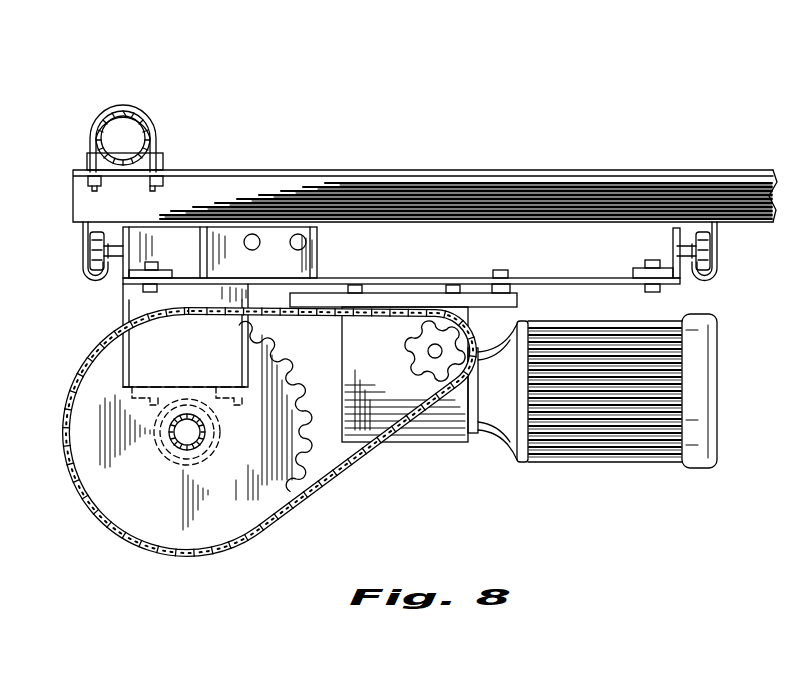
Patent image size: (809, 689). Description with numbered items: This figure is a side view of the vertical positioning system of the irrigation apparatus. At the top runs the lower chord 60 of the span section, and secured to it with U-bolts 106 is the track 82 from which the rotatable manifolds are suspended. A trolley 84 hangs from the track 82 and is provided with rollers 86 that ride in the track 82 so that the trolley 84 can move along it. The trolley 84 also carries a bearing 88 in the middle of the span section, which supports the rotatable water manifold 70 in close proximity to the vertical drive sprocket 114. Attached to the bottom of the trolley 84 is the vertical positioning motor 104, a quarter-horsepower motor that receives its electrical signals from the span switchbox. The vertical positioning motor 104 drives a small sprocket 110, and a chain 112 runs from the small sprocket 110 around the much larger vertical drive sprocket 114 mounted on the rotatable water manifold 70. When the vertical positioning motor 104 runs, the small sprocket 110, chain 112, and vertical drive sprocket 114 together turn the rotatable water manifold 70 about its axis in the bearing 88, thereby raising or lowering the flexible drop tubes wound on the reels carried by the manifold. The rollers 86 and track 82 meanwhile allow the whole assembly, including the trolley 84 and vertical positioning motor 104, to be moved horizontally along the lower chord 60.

The lower chord 60 is at (153, 134).
The U-bolts 106 is at (130, 110).
The trolley 84 is at (562, 278).
The track 82 is at (95, 286).
The rollers 86 is at (98, 252).
The bearing 88 is at (183, 457).
The rotatable water manifold 70 is at (177, 444).
The chain 112 is at (322, 472).
The small sprocket 110 is at (412, 346).
The vertical drive sprocket 114 is at (212, 537).
The vertical positioning motor 104 is at (588, 452).